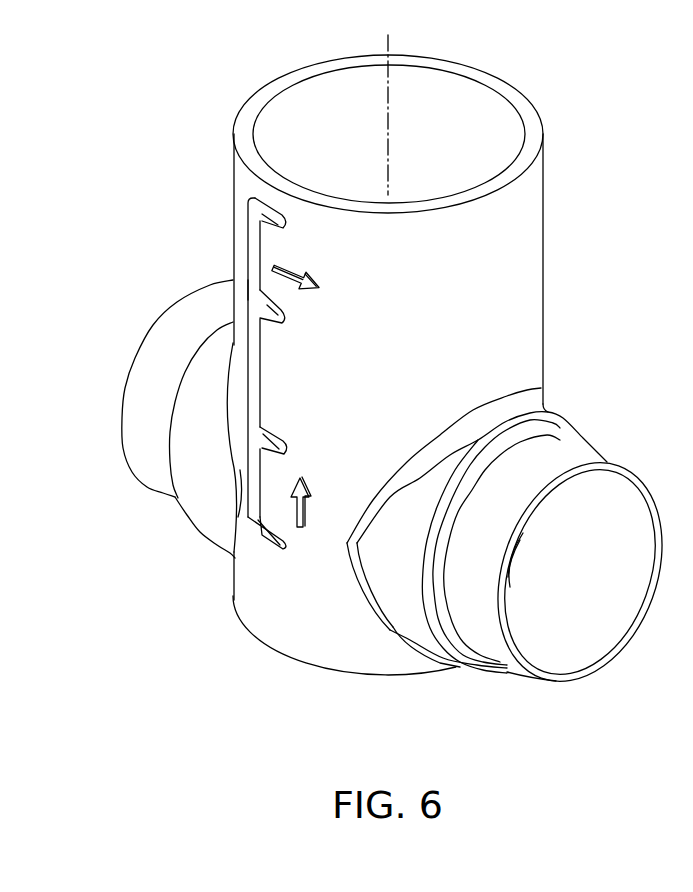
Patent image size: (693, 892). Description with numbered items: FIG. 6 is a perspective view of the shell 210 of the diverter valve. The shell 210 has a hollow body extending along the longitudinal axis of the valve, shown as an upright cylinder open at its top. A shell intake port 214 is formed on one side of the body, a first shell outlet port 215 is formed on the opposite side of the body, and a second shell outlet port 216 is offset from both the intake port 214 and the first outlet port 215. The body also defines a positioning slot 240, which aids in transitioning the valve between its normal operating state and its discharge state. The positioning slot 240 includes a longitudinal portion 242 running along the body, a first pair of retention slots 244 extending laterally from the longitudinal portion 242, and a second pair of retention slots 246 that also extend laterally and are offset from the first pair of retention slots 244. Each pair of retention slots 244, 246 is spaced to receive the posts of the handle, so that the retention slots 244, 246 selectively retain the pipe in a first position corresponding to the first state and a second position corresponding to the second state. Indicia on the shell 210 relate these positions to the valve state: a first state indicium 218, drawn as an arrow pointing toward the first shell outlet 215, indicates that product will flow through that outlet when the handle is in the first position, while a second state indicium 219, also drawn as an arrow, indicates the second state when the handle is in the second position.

The shell 210 is at (165, 162).
The shell intake port 214 is at (112, 400).
The first shell outlet port 215 is at (578, 637).
The second shell outlet port 216 is at (476, 112).
The first state indicium 218 is at (333, 282).
The second state indicium 219 is at (309, 479).
The positioning slot 240 is at (215, 243).
The longitudinal portion 242 is at (254, 288).
The first pair of retention slots 244 is at (284, 223).
The second pair of retention slots 246 is at (288, 440).